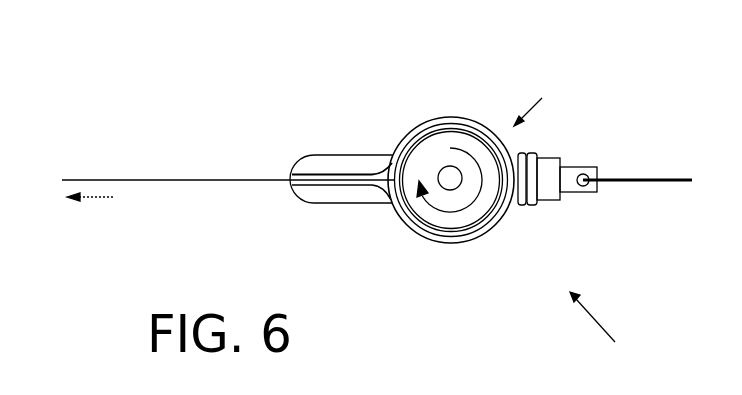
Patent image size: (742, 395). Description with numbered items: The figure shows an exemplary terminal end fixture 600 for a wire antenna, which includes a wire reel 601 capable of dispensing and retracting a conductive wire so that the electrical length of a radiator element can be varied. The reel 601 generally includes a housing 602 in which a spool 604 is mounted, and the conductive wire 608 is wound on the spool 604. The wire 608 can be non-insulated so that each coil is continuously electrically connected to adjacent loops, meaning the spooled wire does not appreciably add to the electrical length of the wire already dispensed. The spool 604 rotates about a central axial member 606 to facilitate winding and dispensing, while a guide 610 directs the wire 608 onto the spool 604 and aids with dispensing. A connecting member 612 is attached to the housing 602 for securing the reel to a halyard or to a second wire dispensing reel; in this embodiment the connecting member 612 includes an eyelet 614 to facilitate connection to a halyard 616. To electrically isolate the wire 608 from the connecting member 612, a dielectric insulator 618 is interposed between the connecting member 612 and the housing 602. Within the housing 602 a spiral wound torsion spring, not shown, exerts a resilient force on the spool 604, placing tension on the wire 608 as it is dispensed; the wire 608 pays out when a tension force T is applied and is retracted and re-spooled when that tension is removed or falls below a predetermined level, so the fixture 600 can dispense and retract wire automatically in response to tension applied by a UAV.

The terminal end fixture 600 is at (604, 329).
The wire reel 601 is at (538, 101).
The housing 602 is at (477, 116).
The spool 604 is at (443, 137).
The central axial member 606 is at (442, 167).
The conductive wire 608 is at (166, 179).
The guide 610 is at (330, 205).
The connecting member 612 is at (568, 198).
The eyelet 614 is at (590, 168).
The halyard 616 is at (656, 178).
The dielectric insulator 618 is at (558, 162).